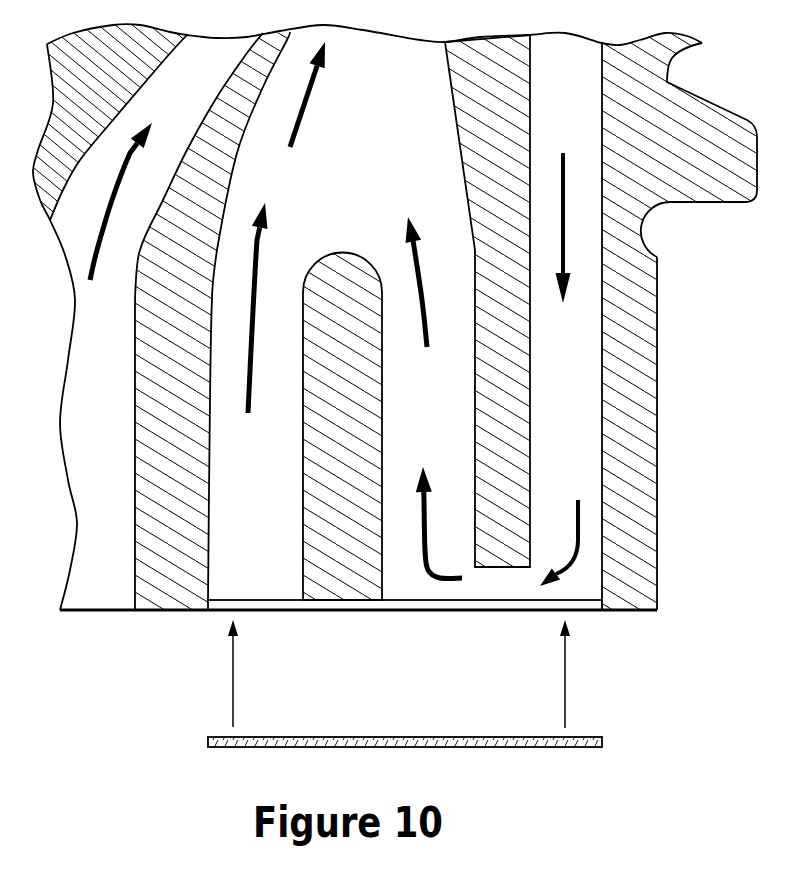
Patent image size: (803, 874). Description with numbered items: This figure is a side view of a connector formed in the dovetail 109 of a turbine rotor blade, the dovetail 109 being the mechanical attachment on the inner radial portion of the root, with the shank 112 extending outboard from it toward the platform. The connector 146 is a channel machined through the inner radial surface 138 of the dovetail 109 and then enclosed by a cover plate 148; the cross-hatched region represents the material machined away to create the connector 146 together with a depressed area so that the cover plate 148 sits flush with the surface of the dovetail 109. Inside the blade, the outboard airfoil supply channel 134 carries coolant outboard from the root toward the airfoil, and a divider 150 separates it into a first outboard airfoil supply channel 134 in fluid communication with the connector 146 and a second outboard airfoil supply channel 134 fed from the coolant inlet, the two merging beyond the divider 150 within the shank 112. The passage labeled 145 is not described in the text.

The dovetail 109 is at (632, 550).
The shank 112 is at (688, 167).
The outboard airfoil supply channel 134 is at (445, 272).
The inner radial surface 138 is at (335, 610).
The passage 145 is at (575, 430).
The connector 146 is at (505, 588).
The cover plate 148 is at (605, 742).
The divider 150 is at (367, 418).